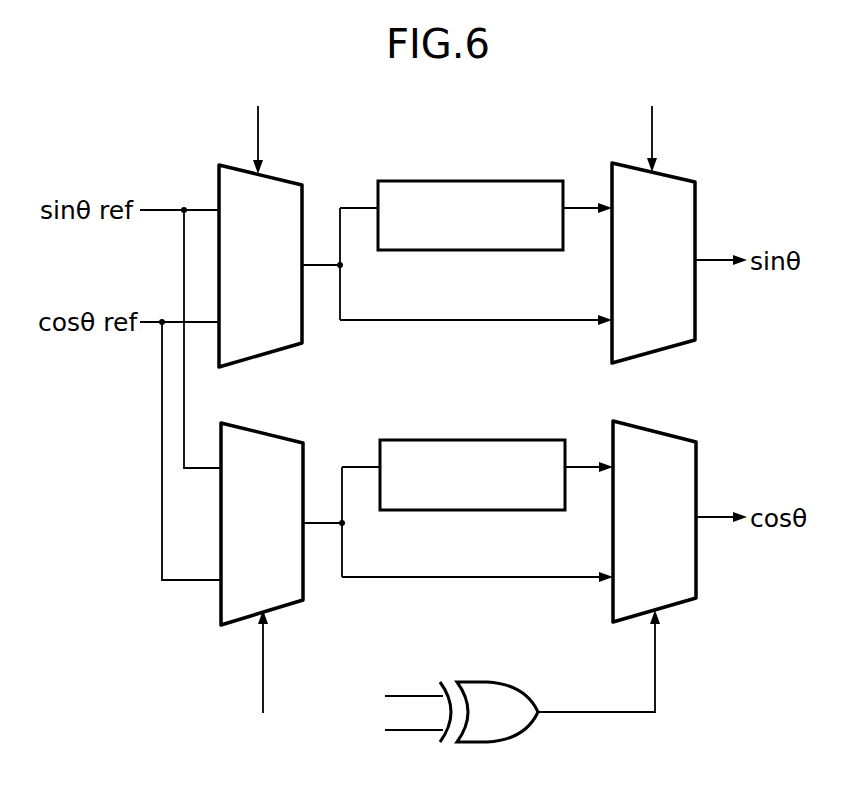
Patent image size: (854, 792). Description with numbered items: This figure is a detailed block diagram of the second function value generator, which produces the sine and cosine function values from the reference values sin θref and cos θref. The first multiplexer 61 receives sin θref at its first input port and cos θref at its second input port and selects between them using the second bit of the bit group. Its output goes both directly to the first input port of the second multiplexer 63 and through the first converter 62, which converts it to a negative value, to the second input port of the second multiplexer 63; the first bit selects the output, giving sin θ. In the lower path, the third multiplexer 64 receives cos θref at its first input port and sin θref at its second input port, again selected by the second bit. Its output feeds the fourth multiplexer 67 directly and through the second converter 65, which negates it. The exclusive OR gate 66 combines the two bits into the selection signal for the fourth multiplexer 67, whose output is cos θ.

The first multiplexer 61 is at (281, 172).
The first converter 62 is at (478, 181).
The second multiplexer 63 is at (672, 174).
The third multiplexer 64 is at (271, 433).
The second converter 65 is at (480, 440).
The exclusive OR gate 66 is at (497, 681).
The fourth multiplexer 67 is at (668, 433).